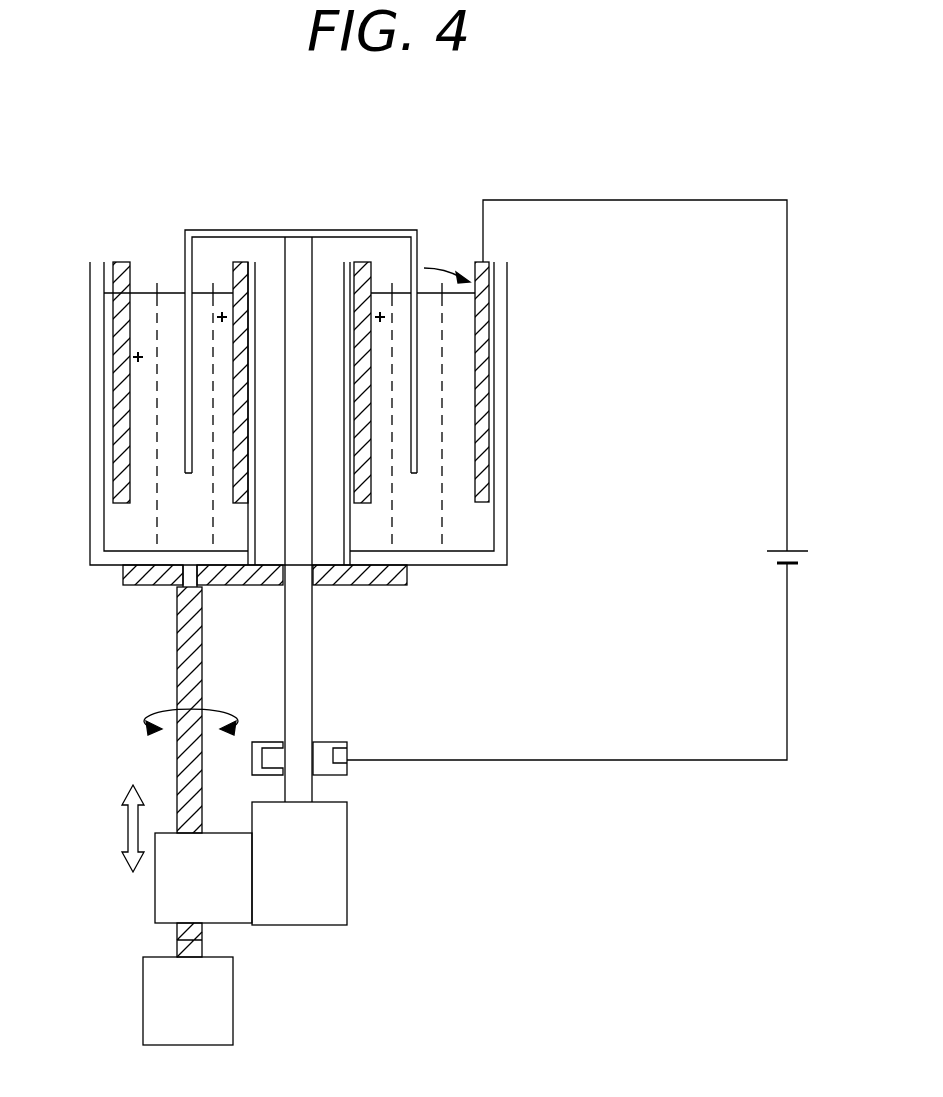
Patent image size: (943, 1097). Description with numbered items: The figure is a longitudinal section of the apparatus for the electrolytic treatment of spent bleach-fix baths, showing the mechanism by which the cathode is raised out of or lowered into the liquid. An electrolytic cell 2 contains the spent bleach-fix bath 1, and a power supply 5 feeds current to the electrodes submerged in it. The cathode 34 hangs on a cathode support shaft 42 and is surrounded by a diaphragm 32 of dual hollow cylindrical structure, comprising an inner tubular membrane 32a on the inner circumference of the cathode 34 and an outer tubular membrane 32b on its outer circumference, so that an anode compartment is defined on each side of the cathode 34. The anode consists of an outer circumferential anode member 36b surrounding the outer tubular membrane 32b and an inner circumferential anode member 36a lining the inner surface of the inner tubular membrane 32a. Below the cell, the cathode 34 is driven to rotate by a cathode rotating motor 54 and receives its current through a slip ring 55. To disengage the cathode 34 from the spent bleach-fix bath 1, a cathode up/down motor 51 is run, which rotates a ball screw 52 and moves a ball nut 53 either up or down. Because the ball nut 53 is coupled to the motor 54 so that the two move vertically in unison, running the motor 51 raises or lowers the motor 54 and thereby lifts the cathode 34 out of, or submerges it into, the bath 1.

The spent bleach-fix bath 1 is at (453, 345).
The electrolytic cell 2 is at (90, 507).
The power supply 5 is at (797, 552).
The diaphragm 32 is at (340, 403).
The inner tubular membrane 32a is at (336, 407).
The outer tubular membrane 32b is at (157, 285).
The cathode 34 is at (418, 247).
The inner circumferential anode member 36a is at (123, 262).
The outer circumferential anode member 36b is at (243, 262).
The cathode support shaft 42 is at (300, 670).
The cathode up/down motor 51 is at (233, 983).
The ball screw 52 is at (175, 638).
The ball nut 53 is at (155, 887).
The cathode rotating motor 54 is at (347, 855).
The slip ring 55 is at (350, 772).